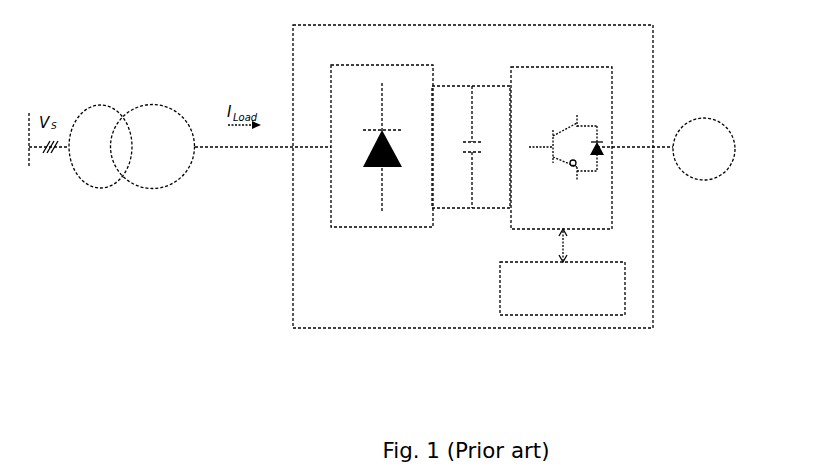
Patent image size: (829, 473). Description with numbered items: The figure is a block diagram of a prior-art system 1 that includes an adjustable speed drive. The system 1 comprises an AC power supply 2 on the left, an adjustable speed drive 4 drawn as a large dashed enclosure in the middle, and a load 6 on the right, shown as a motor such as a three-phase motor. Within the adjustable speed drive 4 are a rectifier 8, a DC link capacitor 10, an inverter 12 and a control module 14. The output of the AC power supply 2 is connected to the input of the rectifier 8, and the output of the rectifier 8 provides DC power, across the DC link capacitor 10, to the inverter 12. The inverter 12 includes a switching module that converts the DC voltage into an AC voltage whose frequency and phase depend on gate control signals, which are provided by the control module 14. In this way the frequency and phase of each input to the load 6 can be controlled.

The system 1 is at (211, 367).
The AC power supply 2 is at (142, 187).
The adjustable speed drive 4 is at (343, 328).
The load 6 is at (728, 130).
The rectifier 8 is at (357, 226).
The DC link capacitor 10 is at (468, 152).
The inverter 12 is at (610, 118).
The control module 14 is at (525, 315).